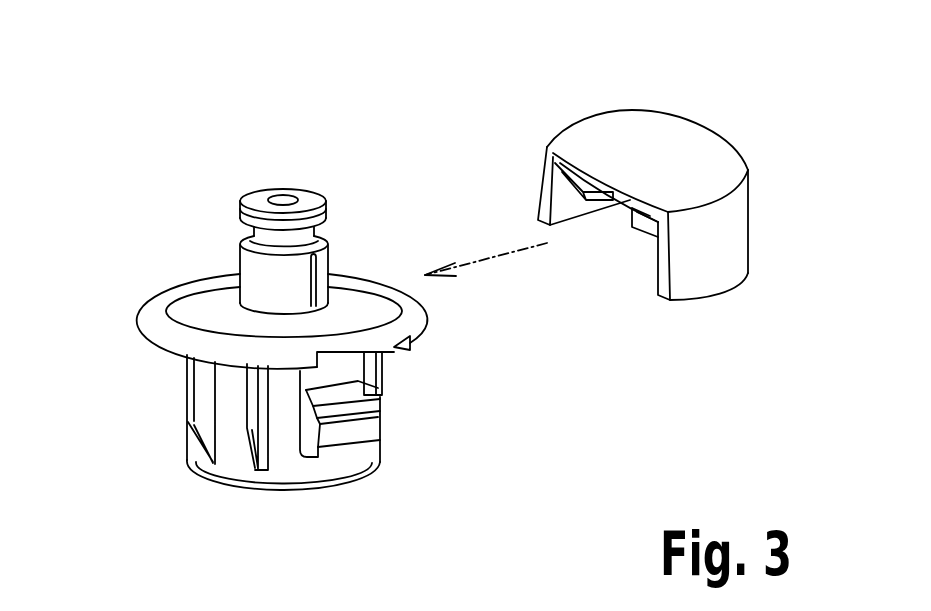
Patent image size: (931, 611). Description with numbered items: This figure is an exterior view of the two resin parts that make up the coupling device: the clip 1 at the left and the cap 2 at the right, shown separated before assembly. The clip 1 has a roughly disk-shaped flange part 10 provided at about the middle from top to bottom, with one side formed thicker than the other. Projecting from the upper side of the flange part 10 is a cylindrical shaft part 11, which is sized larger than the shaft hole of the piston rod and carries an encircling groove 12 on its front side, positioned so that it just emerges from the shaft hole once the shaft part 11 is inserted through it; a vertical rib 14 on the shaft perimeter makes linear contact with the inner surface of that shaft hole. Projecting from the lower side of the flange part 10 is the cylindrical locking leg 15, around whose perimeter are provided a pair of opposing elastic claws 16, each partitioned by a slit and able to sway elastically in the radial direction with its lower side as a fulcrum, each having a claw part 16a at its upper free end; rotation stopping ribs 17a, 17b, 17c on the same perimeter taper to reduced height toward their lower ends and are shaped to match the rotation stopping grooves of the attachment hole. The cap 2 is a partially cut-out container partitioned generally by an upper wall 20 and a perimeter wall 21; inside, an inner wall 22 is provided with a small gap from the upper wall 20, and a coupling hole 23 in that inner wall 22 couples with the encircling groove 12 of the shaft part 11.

The clip 1 is at (150, 275).
The cap 2 is at (720, 112).
The flange part 10 is at (152, 313).
The shaft part 11 is at (240, 256).
The encircling groove 12 is at (320, 232).
The vertical rib 14 is at (328, 265).
The locking leg 15 is at (283, 473).
The elastic claw 16 is at (341, 436).
The claw part 16a is at (380, 402).
The rotation stopping rib 17a is at (385, 362).
The rotation stopping rib 17b is at (188, 392).
The rotation stopping rib 17c is at (250, 457).
The upper wall 20 is at (620, 118).
The perimeter wall 21 is at (735, 237).
The inner wall 22 is at (642, 230).
The coupling hole 23 is at (615, 203).